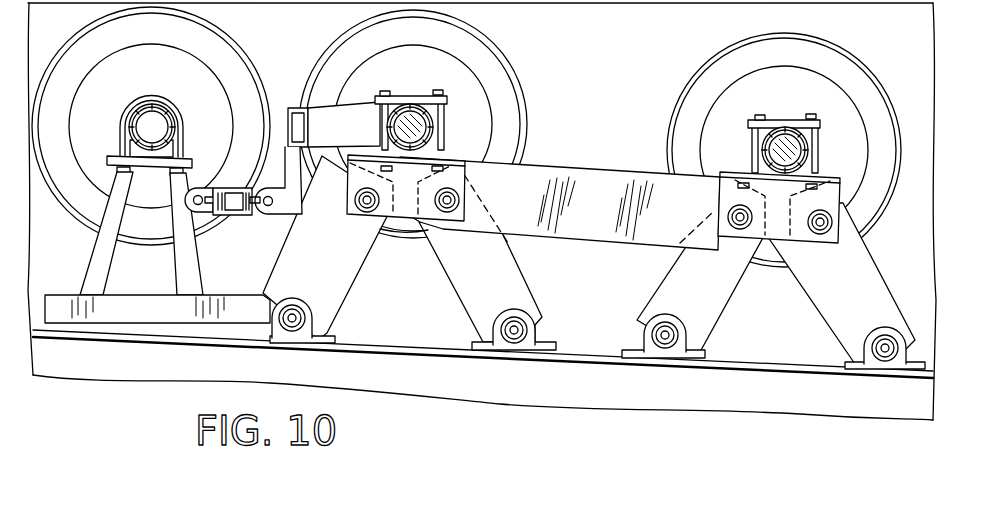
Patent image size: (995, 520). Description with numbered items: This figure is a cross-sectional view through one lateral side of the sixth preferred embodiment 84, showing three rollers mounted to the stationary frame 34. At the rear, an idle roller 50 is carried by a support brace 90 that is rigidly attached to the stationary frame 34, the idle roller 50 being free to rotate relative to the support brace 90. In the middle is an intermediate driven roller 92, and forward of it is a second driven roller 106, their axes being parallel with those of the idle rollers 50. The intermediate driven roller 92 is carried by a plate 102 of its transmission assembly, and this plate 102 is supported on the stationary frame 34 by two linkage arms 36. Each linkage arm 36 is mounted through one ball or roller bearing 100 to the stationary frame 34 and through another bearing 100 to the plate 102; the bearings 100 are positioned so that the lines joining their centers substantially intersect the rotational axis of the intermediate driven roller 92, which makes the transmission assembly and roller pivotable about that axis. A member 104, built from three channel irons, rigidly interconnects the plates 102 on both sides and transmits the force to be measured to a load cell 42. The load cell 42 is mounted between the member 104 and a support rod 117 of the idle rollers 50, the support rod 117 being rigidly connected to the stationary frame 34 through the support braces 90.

The stationary frame 34 is at (736, 378).
The linkage arms 36 is at (335, 297).
The load cell 42 is at (243, 216).
The idle rollers 50 is at (86, 29).
The sixth preferred embodiment 84 is at (564, 402).
The support braces 90 is at (178, 273).
The driven rollers 92 is at (499, 49).
The ball or roller bearing 100 is at (456, 200).
The plate 102 is at (407, 224).
The member 104 is at (287, 108).
The second driven rollers 106 is at (850, 53).
The support rod 117 is at (200, 188).